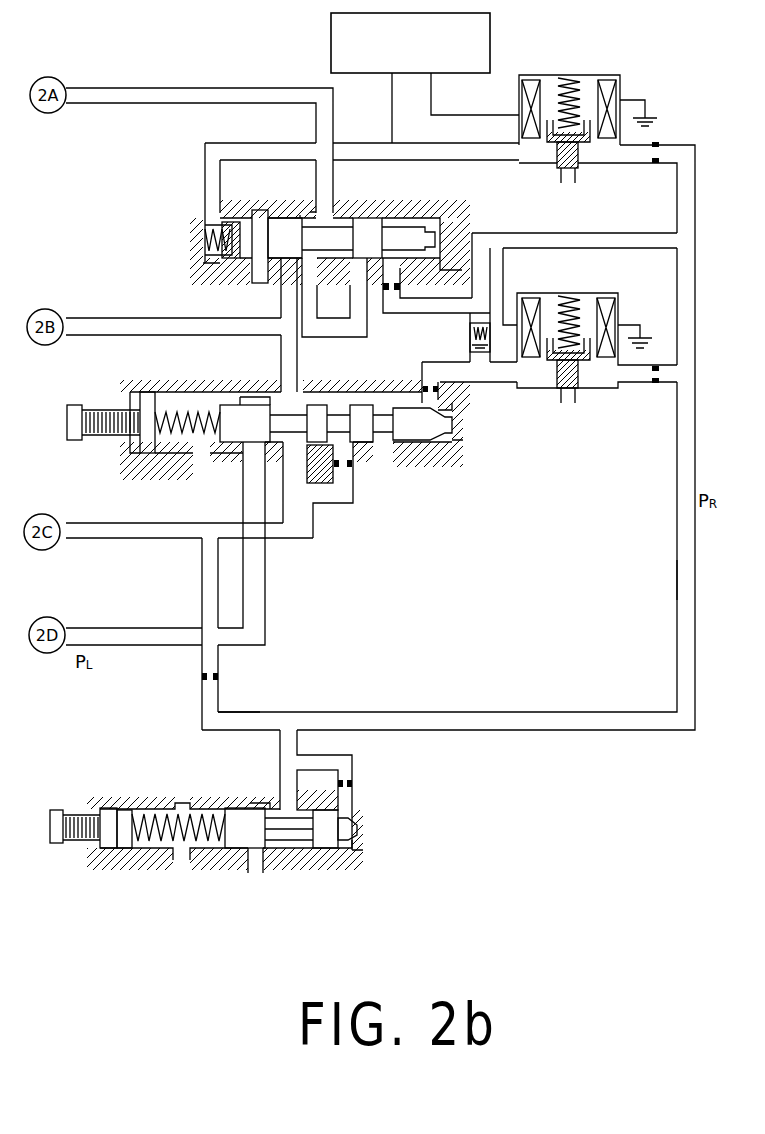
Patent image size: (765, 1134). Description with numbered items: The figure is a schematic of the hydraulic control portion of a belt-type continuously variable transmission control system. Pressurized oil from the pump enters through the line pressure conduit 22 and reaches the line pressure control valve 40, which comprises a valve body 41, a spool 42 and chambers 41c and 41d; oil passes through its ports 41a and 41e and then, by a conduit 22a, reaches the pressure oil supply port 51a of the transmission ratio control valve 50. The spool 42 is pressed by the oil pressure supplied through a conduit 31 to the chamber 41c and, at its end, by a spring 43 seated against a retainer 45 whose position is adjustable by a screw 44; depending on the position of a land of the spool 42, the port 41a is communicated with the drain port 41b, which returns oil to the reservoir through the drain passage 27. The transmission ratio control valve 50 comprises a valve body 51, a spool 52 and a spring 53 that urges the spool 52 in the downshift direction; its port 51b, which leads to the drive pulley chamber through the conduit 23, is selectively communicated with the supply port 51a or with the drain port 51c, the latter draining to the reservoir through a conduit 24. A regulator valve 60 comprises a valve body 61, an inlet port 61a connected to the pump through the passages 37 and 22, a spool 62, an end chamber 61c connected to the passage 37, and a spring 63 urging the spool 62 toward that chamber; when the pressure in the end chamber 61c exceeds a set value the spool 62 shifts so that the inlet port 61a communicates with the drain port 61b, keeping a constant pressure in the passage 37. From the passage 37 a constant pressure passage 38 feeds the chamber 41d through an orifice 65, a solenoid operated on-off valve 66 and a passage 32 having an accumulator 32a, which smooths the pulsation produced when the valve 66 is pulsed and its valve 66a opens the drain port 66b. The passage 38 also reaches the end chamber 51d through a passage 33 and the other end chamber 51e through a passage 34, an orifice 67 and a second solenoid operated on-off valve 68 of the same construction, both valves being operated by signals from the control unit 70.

The control unit 70 is at (490, 45).
The conduit 23 is at (156, 88).
The passage 34 is at (428, 150).
The constant pressure passage 38 is at (677, 565).
The passage 37 is at (250, 712).
The solenoid operated on-off valve 68 is at (617, 75).
The orifice 67 is at (660, 140).
The passage 33 is at (587, 235).
The transmission ratio control valve 50 is at (445, 207).
The spring 53 is at (200, 220).
The end chamber 51e is at (216, 254).
The spool 52 is at (272, 228).
The valve body 51 is at (374, 212).
The pressure oil supply port 51a is at (275, 283).
The port 51b is at (320, 215).
The drain port 51c is at (334, 297).
The end chamber 51d is at (397, 290).
The conduit 24 is at (168, 322).
The conduit 22a is at (281, 305).
The passage 32 is at (477, 356).
The accumulator 32a is at (455, 370).
The solenoid operated on-off valve 66 is at (608, 293).
The valve 66a is at (577, 368).
The drain port 66b is at (565, 402).
The orifice 65 is at (655, 388).
The line pressure control valve 40 is at (437, 481).
The screw 44 is at (73, 442).
The retainer 45 is at (150, 455).
The spring 43 is at (210, 412).
The valve body 41 is at (385, 395).
The spool 42 is at (320, 420).
The chamber 41d is at (440, 455).
The port 41e is at (290, 400).
The drain port 41b is at (252, 463).
The port 41a is at (313, 520).
The conduit 31 is at (340, 505).
The chamber 41c is at (352, 463).
The line pressure conduit 22 is at (118, 523).
The drain passage 27 is at (125, 630).
The regulator valve 60 is at (391, 827).
The valve body 61 is at (150, 858).
The spring 63 is at (183, 812).
The spool 62 is at (243, 848).
The inlet port 61a is at (285, 805).
The drain port 61b is at (262, 868).
The end chamber 61c is at (350, 852).